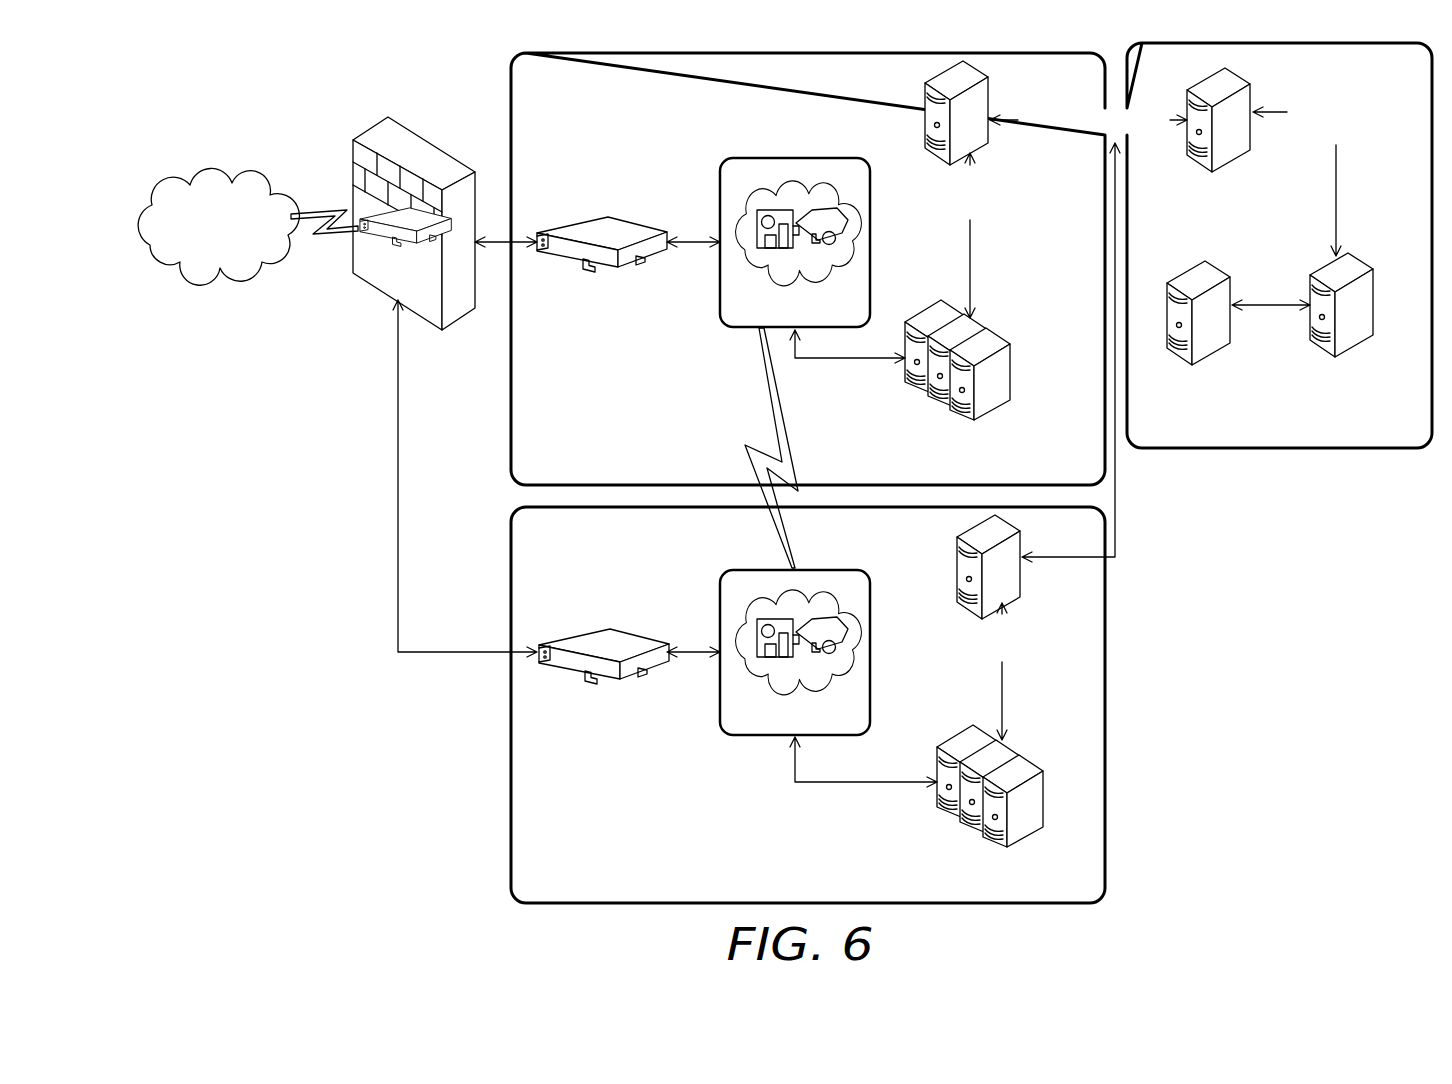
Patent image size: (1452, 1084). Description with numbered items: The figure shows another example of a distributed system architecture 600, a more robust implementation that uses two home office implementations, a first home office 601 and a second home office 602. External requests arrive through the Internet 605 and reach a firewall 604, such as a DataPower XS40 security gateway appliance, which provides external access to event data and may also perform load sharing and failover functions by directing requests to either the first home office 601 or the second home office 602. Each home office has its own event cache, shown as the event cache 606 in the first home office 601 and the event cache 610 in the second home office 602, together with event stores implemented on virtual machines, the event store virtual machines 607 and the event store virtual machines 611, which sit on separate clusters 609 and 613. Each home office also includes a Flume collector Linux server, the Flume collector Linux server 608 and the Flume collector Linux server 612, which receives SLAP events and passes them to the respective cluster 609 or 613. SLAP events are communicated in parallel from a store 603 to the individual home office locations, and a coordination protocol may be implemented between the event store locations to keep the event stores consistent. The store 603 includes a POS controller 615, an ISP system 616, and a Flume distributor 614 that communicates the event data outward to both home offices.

The distributed system architecture 600 is at (1210, 677).
The home office 601 is at (505, 86).
The home office 602 is at (505, 537).
The store 603 is at (1354, 457).
The firewall 604 is at (375, 125).
The Internet 605 is at (210, 176).
The event cache 606 is at (600, 217).
The event store virtual machines 607 is at (750, 157).
The Flume collector Linux server 608 is at (923, 98).
The cluster 609 is at (994, 332).
The event cache 610 is at (601, 628).
The event store virtual machines 611 is at (751, 568).
The Flume collector Linux server 612 is at (956, 550).
The cluster 613 is at (936, 807).
The Flume distributor 614 is at (1205, 80).
The POS controller 615 is at (1222, 267).
The ISP system 616 is at (1350, 251).